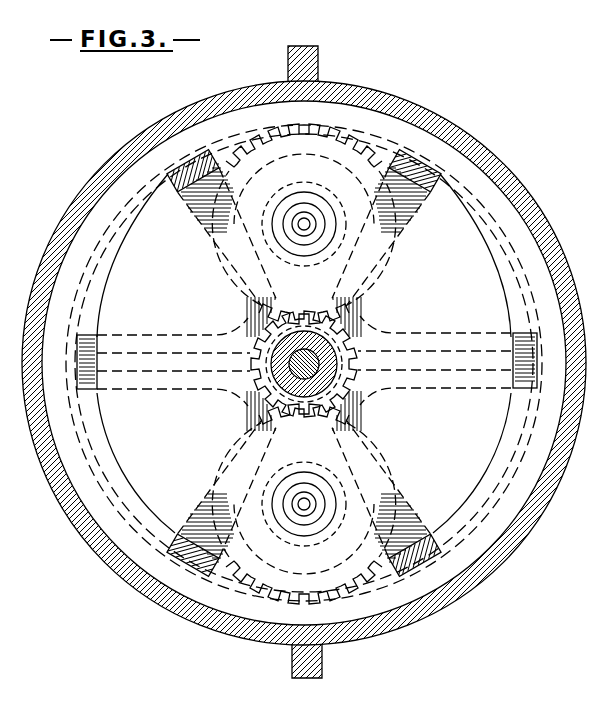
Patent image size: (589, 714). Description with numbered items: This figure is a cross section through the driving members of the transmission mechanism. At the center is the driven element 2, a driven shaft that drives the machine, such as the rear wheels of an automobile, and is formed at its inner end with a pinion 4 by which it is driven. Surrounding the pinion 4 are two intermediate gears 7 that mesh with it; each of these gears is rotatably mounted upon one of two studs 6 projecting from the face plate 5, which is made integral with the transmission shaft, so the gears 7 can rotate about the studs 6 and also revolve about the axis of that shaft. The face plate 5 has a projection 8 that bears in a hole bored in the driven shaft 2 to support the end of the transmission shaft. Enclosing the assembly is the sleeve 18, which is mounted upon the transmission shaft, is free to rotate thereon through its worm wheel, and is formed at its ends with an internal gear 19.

The driven element 2 is at (283, 379).
The pinion 4 is at (340, 315).
The face plate 5 is at (489, 264).
The studs 6 is at (318, 213).
The intermediate gears 7 is at (303, 364).
The projection 8 is at (266, 344).
The sleeve 18 is at (371, 384).
The internal gear 19 is at (337, 114).